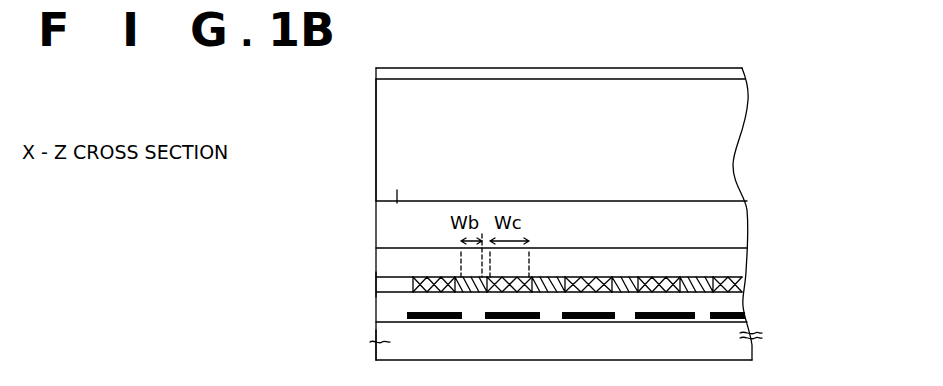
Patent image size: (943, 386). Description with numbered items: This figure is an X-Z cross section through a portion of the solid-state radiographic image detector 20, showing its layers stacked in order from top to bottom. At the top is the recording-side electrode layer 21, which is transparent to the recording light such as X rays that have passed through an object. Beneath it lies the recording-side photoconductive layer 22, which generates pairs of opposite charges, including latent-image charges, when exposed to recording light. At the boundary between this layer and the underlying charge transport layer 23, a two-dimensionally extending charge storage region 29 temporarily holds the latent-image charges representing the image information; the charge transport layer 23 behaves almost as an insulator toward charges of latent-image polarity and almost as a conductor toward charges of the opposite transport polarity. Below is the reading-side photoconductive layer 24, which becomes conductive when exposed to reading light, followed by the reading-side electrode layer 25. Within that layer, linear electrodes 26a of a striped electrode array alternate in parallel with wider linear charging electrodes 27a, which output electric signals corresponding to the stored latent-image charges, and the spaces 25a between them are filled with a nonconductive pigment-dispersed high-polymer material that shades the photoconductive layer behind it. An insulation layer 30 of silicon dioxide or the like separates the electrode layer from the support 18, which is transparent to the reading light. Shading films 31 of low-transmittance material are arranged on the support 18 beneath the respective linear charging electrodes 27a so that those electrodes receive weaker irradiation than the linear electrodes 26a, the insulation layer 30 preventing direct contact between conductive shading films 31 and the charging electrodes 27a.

The solid-state radiographic image detector 20 is at (340, 113).
The recording-side electrode layer 21 is at (376, 70).
The recording-side photoconductive layer 22 is at (383, 138).
The charge storage region 29 is at (396, 187).
The charge transport layer 23 is at (385, 228).
The reading-side photoconductive layer 24 is at (385, 268).
The reading-side electrode layer 25 is at (578, 255).
The spaces 25a is at (638, 277).
The linear electrodes 26a is at (696, 278).
The linear charging electrodes 27a is at (585, 277).
The insulation layer 30 is at (385, 319).
The shading films 31 is at (678, 306).
The support 18 is at (385, 353).